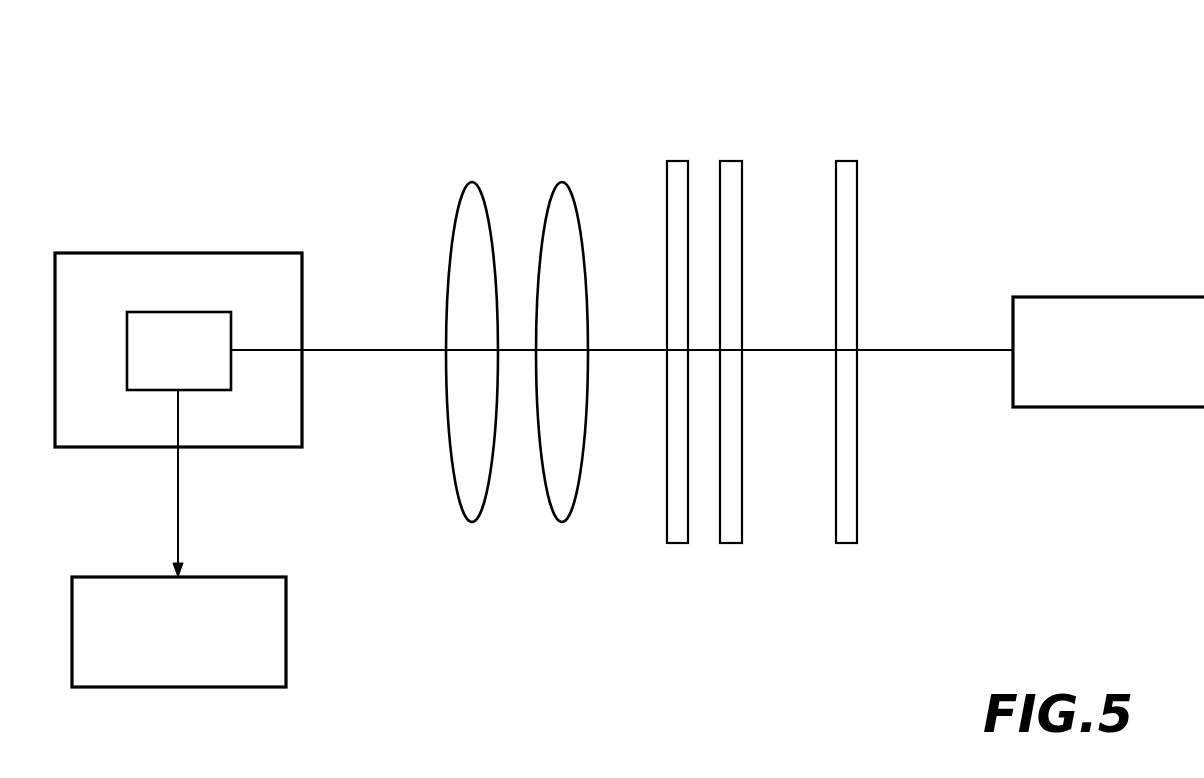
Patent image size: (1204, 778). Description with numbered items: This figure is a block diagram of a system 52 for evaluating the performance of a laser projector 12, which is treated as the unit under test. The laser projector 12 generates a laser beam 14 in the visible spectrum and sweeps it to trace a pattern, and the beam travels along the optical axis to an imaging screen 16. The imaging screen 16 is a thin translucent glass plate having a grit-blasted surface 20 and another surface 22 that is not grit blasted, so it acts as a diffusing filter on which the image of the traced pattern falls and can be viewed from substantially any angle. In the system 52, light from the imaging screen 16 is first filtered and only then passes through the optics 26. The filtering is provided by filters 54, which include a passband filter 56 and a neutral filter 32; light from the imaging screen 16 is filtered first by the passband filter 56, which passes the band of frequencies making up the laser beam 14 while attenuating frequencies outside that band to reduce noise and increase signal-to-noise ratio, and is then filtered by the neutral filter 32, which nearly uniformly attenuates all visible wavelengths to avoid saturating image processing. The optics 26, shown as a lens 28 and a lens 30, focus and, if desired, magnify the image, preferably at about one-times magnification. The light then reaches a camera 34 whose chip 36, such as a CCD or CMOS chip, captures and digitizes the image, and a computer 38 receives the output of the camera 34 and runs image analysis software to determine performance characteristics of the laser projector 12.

The laser projector 12 is at (1160, 297).
The laser beam 14 is at (926, 350).
The imaging screen 16 is at (850, 302).
The surface 20 is at (857, 200).
The surface 22 is at (850, 351).
The optics 26 is at (555, 105).
The lens 28 is at (565, 180).
The lens 30 is at (470, 180).
The neutral filter 32 is at (649, 562).
The camera 34 is at (235, 253).
The chip 36 is at (182, 361).
The computer 38 is at (286, 632).
The system 52 is at (278, 126).
The filters 54 is at (680, 334).
The passband filter 56 is at (758, 562).